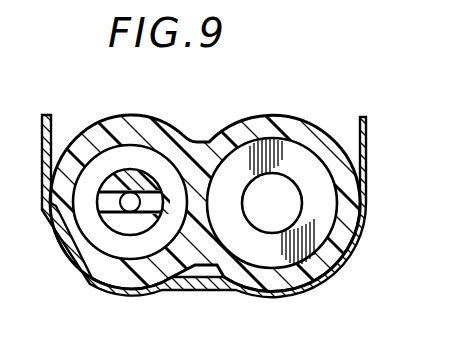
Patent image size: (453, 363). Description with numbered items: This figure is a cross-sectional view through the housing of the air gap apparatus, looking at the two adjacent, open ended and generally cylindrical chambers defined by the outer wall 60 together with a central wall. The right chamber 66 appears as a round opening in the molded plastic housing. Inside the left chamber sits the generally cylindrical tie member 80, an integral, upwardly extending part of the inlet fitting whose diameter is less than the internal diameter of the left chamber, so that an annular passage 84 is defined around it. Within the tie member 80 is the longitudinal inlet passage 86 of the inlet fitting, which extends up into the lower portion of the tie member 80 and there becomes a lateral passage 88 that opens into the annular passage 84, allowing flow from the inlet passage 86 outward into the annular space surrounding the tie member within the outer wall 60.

The outer wall 60 is at (117, 117).
The annular passage 84 is at (170, 172).
The tie member 80 is at (151, 178).
The inlet passage 86 is at (125, 227).
The lateral passage 88 is at (100, 211).
The right chamber 66 is at (302, 162).